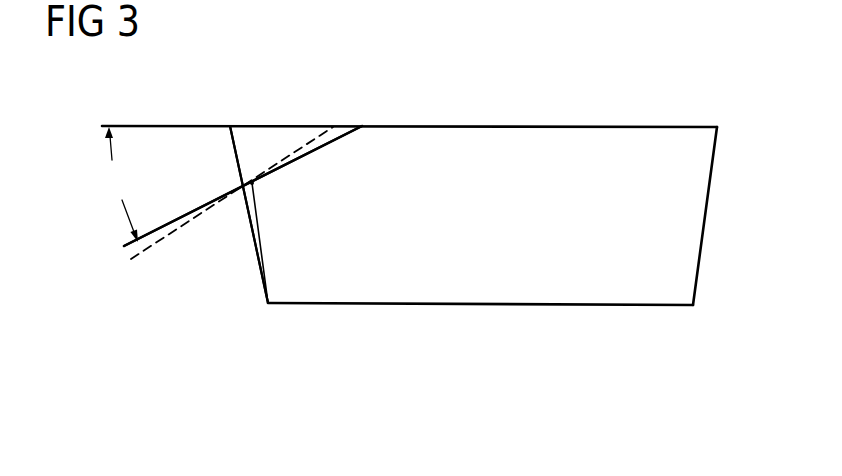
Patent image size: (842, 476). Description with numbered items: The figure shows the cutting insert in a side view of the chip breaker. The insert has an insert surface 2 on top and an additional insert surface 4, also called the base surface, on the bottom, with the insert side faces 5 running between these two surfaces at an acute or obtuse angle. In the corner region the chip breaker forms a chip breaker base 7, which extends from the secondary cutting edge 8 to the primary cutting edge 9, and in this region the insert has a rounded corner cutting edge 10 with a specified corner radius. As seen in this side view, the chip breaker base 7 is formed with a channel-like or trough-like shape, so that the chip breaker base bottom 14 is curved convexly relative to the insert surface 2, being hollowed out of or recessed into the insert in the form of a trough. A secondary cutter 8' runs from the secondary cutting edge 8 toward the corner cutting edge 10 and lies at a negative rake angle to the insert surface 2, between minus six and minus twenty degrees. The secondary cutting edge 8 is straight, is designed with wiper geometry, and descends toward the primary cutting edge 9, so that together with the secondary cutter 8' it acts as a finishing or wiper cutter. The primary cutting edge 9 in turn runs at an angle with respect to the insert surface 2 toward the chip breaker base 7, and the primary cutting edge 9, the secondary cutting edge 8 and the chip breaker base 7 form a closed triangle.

The insert surface 2 is at (548, 127).
The additional insert surface 4 is at (478, 307).
The insert side faces 5 is at (652, 157).
The chip breaker base 7 is at (315, 139).
The secondary cutting edge 8 is at (243, 144).
The secondary cutter 8' is at (243, 153).
The primary cutting edge 9 is at (247, 202).
The corner cutting edge 10 is at (255, 185).
The chip breaker base bottom 14 is at (246, 183).